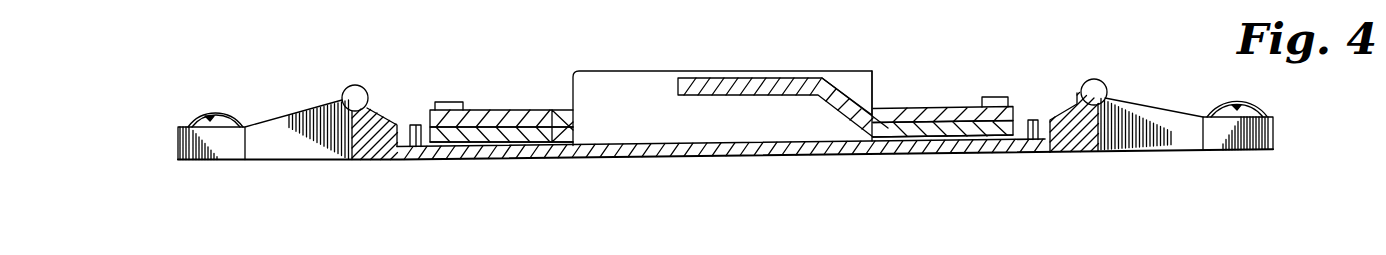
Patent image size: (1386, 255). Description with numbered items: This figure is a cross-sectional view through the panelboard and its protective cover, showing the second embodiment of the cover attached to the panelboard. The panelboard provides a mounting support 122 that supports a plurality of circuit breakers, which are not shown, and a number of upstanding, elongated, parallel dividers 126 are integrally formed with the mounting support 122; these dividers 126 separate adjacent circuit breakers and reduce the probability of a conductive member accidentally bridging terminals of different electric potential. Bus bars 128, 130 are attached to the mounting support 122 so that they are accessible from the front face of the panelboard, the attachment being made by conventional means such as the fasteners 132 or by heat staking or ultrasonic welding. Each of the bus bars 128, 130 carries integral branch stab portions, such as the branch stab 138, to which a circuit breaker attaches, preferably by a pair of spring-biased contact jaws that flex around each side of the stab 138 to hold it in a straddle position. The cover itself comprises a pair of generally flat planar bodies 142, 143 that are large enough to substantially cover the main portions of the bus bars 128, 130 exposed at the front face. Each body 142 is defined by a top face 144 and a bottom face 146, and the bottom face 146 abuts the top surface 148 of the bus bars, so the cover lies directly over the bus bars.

The mounting support 122 is at (347, 87).
The dividers 126 is at (609, 98).
The bus bar 128 is at (483, 135).
The bus bar 130 is at (938, 130).
The fasteners 132 is at (1000, 97).
The branch stab portion 138 is at (745, 85).
The flat planar body 142 is at (495, 110).
The flat planar body 143 is at (933, 110).
The top face 144 is at (543, 110).
The bottom face 146 is at (528, 144).
The top surface 148 is at (850, 92).